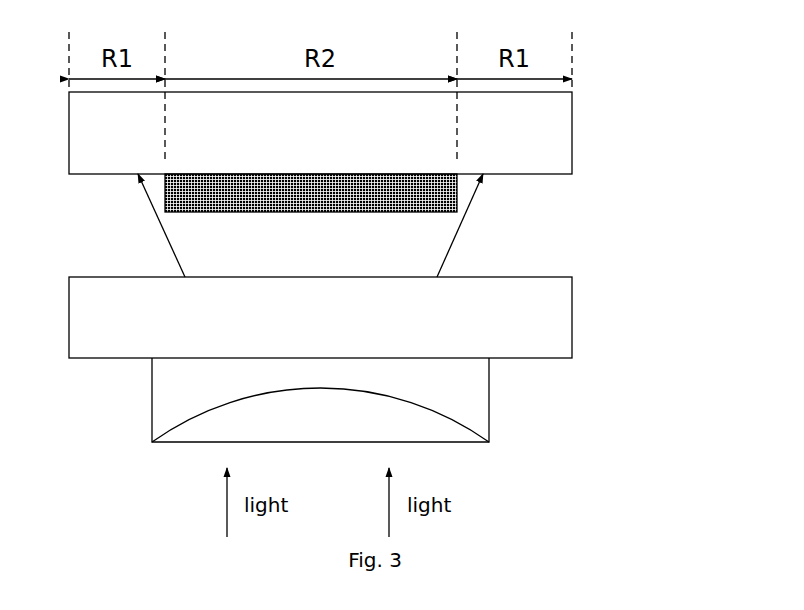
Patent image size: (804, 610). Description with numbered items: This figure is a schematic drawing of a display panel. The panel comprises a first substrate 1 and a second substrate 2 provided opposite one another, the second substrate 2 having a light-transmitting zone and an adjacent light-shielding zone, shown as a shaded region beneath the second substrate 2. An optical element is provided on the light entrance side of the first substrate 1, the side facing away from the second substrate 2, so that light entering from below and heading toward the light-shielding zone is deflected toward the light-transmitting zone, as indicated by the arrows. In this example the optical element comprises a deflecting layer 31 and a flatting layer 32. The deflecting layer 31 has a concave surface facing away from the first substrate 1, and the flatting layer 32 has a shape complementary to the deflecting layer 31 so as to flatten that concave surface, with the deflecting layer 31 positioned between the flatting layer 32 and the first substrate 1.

The first substrate 1 is at (552, 310).
The second substrate 2 is at (552, 133).
The deflecting layer 31 is at (470, 405).
The flatting layer 32 is at (457, 432).